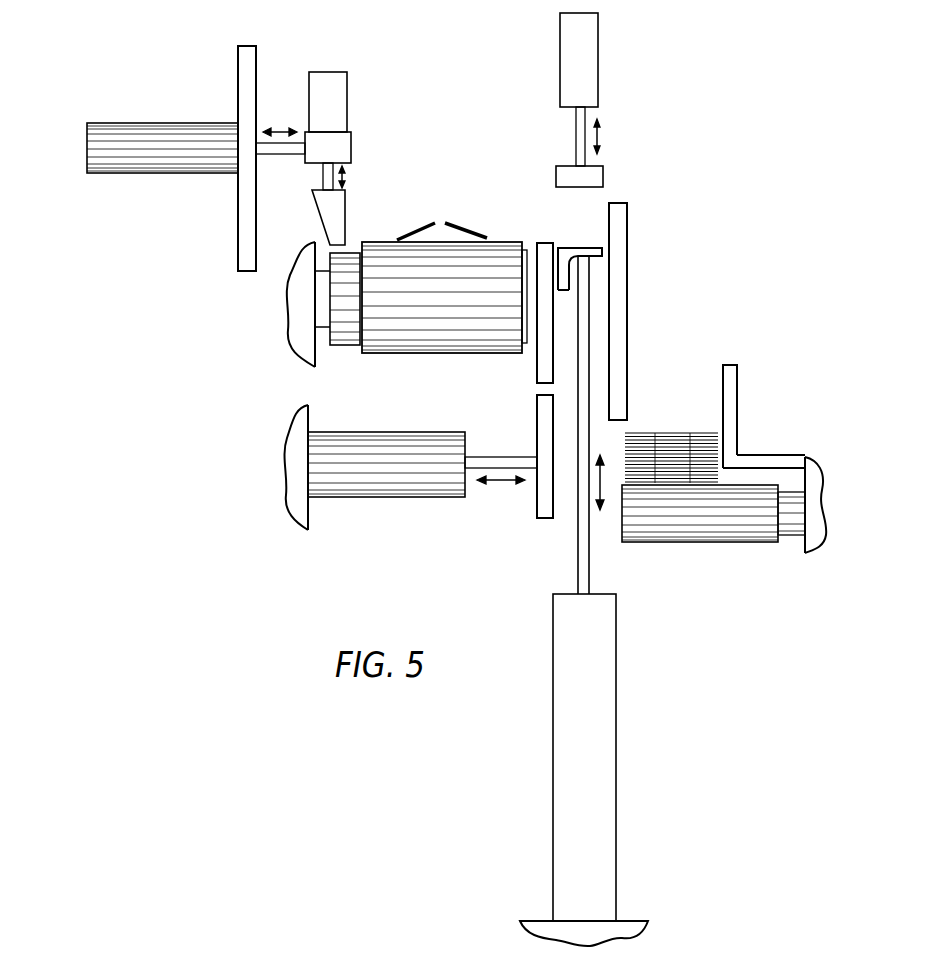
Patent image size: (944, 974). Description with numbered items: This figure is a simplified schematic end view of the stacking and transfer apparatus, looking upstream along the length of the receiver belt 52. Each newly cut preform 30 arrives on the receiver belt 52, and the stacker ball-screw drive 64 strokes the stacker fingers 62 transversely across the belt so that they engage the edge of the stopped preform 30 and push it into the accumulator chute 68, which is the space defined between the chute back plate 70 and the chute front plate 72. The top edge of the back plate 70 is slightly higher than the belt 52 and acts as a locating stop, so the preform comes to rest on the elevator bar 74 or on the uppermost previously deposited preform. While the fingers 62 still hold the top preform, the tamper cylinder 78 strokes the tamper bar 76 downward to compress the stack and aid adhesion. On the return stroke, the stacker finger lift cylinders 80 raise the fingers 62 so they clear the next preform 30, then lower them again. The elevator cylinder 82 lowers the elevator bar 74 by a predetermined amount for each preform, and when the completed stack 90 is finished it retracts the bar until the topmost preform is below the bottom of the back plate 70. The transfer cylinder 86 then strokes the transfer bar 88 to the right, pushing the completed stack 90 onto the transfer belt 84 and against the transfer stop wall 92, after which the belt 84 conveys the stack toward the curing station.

The preform 30 is at (465, 225).
The receiver belt 52 is at (428, 337).
The stacker fingers 62 is at (338, 206).
The stacker ball-screw drive 64 is at (153, 130).
The accumulator chute 68 is at (566, 345).
The chute back plate 70 is at (620, 228).
The chute front plate 72 is at (538, 368).
The elevator bar 74 is at (596, 258).
The tamper bar 76 is at (598, 178).
The tamper cylinder 78 is at (590, 33).
The stacker finger lift cylinders 80 is at (340, 92).
The elevator cylinder 82 is at (603, 695).
The transfer belt 84 is at (712, 522).
The transfer cylinder 86 is at (383, 440).
The transfer bar 88 is at (538, 508).
The completed stack 90 is at (731, 475).
The transfer stop wall 92 is at (733, 377).